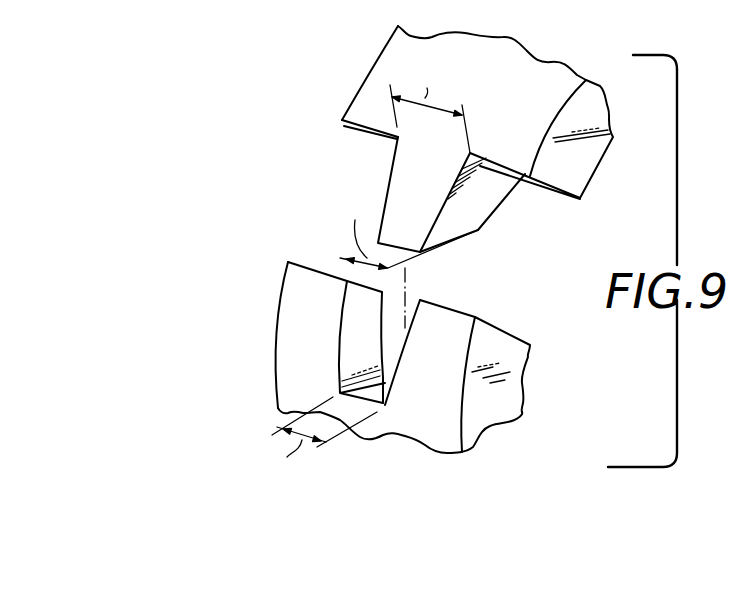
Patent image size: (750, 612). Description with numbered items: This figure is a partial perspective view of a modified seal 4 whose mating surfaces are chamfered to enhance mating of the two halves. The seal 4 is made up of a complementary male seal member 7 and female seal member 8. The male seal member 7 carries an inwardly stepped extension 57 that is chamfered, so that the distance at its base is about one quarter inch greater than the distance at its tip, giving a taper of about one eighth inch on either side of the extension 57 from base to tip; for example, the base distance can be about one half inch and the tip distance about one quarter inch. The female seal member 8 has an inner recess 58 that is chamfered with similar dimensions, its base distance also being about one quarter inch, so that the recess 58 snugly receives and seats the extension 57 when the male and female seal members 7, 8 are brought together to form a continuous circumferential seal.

The seal 4 is at (292, 182).
The male seal member 7 is at (520, 106).
The female seal member 8 is at (428, 403).
The extension 57 is at (410, 180).
The recess 58 is at (428, 285).